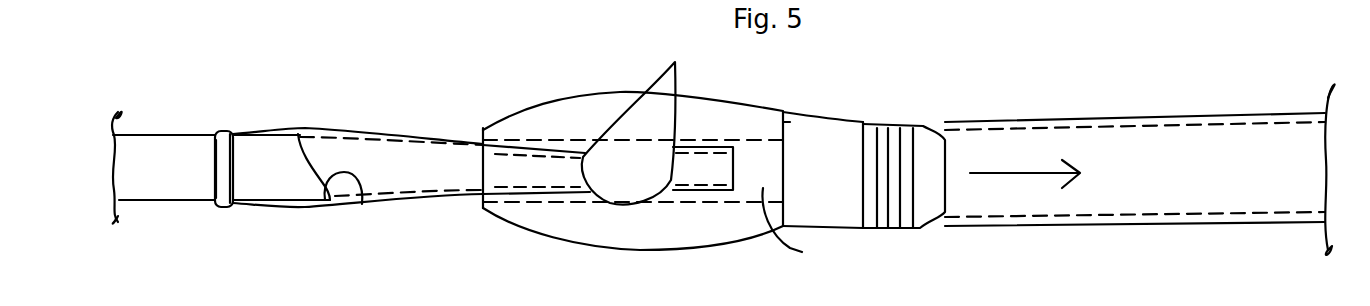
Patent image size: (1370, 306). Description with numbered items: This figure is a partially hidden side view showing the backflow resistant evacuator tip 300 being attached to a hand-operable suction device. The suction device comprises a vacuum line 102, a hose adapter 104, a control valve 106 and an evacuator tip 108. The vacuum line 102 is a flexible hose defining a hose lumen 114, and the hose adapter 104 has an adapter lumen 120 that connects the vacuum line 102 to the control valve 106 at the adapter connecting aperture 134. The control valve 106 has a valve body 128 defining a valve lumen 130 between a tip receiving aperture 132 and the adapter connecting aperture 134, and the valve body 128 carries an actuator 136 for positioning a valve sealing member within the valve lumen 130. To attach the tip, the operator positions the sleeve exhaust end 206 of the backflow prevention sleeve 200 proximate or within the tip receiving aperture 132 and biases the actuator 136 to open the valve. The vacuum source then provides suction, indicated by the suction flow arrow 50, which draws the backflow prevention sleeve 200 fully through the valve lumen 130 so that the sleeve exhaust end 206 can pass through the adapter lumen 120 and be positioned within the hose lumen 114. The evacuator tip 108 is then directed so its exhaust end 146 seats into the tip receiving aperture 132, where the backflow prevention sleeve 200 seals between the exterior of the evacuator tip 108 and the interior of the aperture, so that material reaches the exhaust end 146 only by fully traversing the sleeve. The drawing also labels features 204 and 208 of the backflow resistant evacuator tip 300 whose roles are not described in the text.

The suction flow arrow 50 is at (1025, 167).
The vacuum line 102 is at (1092, 120).
The hose adapter 104 is at (848, 120).
The control valve 106 is at (715, 245).
The evacuator tip 108 is at (150, 204).
The hose lumen 114 is at (1130, 155).
The adapter lumen 120 is at (838, 163).
The valve body 128 is at (540, 100).
The valve lumen 130 is at (804, 230).
The tip receiving aperture 132 is at (482, 205).
The adapter connecting aperture 134 is at (793, 122).
The actuator 136 is at (622, 110).
The exhaust end 146 is at (348, 206).
The backflow prevention sleeve 200 is at (350, 130).
The clamp lower end 204 is at (214, 192).
The sleeve exhaust end 206 is at (736, 168).
The clamp ring 208 is at (236, 133).
The backflow resistant evacuator tip 300 is at (210, 132).